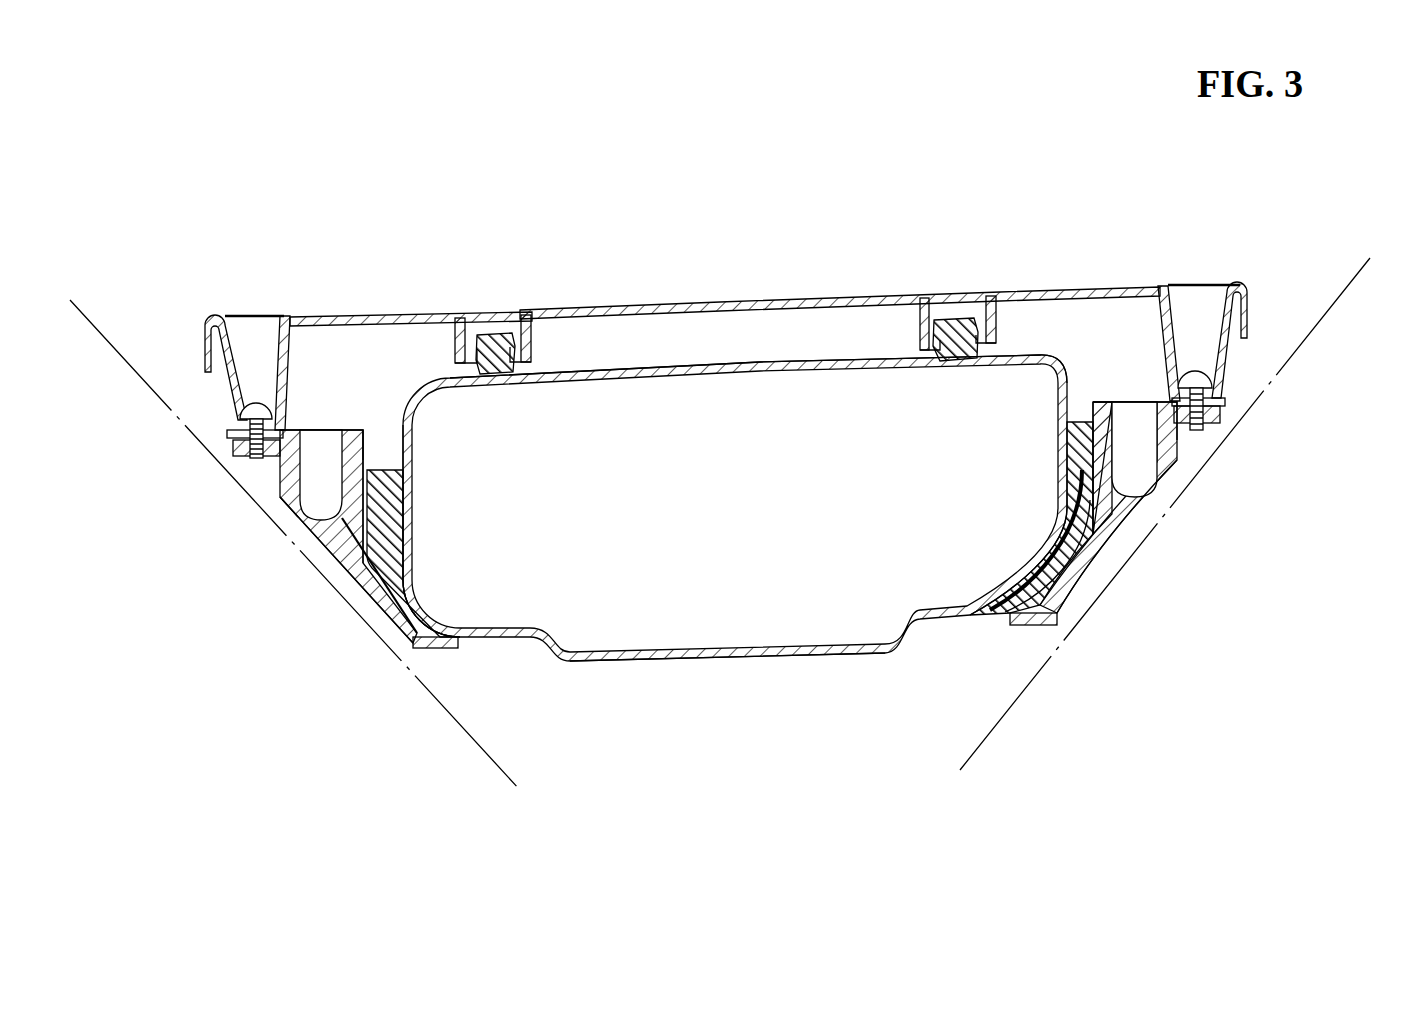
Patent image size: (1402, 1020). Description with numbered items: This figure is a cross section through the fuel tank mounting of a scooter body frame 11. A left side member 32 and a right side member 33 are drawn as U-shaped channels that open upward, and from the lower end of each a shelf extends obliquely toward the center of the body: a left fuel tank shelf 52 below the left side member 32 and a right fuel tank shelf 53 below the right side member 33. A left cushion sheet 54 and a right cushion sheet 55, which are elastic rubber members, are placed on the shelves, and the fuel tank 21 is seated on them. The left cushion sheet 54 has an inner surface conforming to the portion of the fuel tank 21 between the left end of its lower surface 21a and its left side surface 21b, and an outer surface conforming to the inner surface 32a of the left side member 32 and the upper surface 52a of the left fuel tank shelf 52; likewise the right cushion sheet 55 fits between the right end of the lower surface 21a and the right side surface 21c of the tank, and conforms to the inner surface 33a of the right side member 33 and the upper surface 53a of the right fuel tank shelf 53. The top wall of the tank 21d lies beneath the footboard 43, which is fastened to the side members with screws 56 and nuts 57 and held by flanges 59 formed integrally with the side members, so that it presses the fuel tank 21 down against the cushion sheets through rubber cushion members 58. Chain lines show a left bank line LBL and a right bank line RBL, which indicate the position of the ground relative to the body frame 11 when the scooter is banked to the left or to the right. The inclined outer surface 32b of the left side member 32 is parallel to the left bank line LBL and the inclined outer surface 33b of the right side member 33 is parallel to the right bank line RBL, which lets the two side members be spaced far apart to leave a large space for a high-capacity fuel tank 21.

The body frame 11 is at (276, 516).
The fuel tank 21 is at (666, 678).
The lower surface of the fuel tank 21a is at (850, 662).
The left side surface of the fuel tank 21b is at (409, 443).
The right side surface of the fuel tank 21c is at (1050, 405).
The tub top wall 21d is at (728, 362).
The left side member 32 is at (327, 570).
The inner surface of the left side member 32a is at (360, 452).
The inclined outer surface of the left side member 32b is at (335, 585).
The right side member 33 is at (1156, 542).
The inner surface of the right side member 33a is at (1105, 400).
The inclined outer surface of the right side member 33b is at (1140, 563).
The footboard 43 is at (742, 300).
The left fuel tank shelf 52 is at (452, 650).
The upper surface of the left fuel tank shelf 52a is at (440, 628).
The right fuel tank shelf 53 is at (1030, 628).
The upper surface of the right fuel tank shelf 53a is at (1020, 600).
The left cushion sheet 54 is at (392, 470).
The right cushion sheet 55 is at (1080, 420).
The screw 56 is at (256, 402).
The nut 57 is at (240, 450).
The rubber cushion member 58 is at (495, 340).
The flange 59 is at (220, 428).
The left bank line LBL is at (470, 755).
The right bank line RBL is at (990, 736).